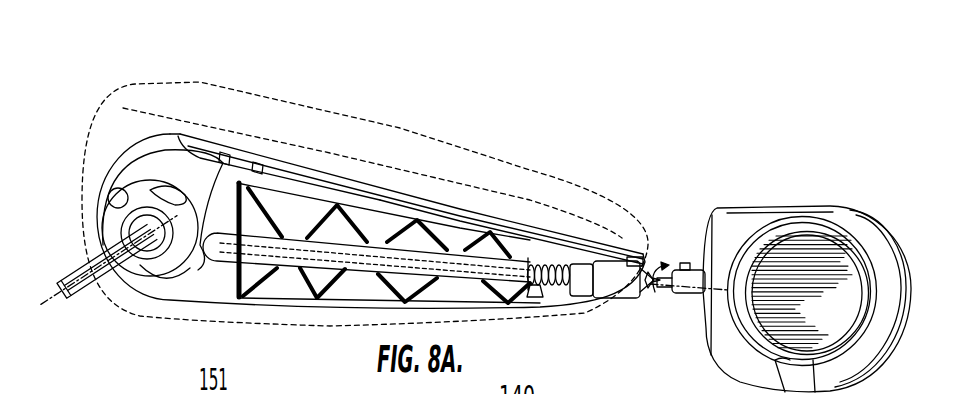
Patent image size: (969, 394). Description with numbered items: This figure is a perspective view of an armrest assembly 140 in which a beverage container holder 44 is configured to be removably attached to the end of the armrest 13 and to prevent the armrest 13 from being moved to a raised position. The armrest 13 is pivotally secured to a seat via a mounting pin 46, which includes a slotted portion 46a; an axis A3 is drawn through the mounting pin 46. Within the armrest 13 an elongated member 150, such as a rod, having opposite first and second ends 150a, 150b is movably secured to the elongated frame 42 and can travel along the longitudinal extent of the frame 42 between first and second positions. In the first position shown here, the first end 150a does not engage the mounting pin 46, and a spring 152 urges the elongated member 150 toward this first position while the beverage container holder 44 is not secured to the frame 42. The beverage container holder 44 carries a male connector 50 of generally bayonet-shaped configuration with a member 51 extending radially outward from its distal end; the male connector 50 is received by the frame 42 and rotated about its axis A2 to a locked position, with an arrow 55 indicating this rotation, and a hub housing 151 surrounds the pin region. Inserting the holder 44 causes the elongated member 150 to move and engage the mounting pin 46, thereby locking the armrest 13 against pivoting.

The armrest 13 is at (432, 152).
The armrest assembly 140 is at (418, 100).
The elongated frame 42 is at (453, 214).
The beverage container holder 44 is at (737, 230).
The mounting pin 46 is at (72, 275).
The slotted portion 46a is at (100, 172).
The male connector 50 is at (703, 273).
The member 51 is at (678, 263).
The rotation arrow 55 is at (660, 297).
The elongated member 150 is at (220, 224).
The first end 150a is at (190, 240).
The second end 150b is at (527, 262).
The hub housing 151 is at (170, 222).
The spring 152 is at (560, 263).
The axis A2 is at (702, 297).
The axis A3 is at (53, 300).